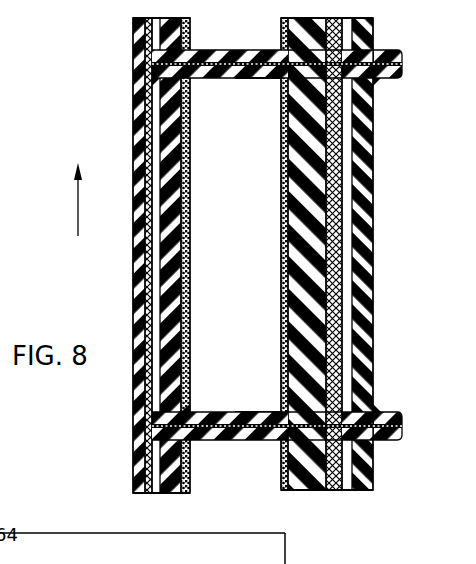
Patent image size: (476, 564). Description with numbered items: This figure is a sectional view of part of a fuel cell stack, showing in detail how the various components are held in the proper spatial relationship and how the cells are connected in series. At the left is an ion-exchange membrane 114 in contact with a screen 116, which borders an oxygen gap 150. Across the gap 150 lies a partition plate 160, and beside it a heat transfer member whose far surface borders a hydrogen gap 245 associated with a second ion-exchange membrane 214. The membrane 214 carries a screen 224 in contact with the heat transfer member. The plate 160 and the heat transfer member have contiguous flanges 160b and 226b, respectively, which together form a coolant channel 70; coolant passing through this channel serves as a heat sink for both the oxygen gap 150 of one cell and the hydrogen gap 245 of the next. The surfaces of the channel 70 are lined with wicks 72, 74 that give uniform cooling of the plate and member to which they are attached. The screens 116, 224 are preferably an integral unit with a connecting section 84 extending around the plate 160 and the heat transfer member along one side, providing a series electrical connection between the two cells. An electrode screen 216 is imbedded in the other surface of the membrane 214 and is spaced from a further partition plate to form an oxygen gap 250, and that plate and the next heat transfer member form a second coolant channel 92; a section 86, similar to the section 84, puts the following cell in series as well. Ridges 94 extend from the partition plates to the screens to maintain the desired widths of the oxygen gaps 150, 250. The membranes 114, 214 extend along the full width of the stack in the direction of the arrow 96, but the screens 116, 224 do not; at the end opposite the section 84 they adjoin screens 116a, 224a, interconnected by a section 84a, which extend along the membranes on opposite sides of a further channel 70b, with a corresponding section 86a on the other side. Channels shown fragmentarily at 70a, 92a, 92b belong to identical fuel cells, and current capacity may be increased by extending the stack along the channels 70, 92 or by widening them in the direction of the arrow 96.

The coolant channel 70 is at (246, 247).
The coolant channel 70a is at (235, 31).
The coolant channel 70b is at (250, 502).
The wick 72 is at (188, 262).
The wick 74 is at (280, 250).
The connecting section 84 is at (225, 55).
The connecting section 84a is at (237, 430).
The connecting section 86 is at (399, 64).
The connecting section 86a is at (398, 438).
The coolant channel 92 is at (420, 247).
The coolant channel 92a is at (432, 37).
The coolant channel 92b is at (423, 494).
The ridges 94 is at (150, 68).
The arrow 96 is at (78, 191).
The ion-exchange membrane 114 is at (138, 378).
The screen 116 is at (138, 297).
The screen 116a is at (145, 458).
The oxygen gap 150 is at (150, 200).
The partition plate 160 is at (170, 178).
The flange 160b is at (218, 79).
The ion-exchange membrane 214 is at (345, 318).
The electrode screen 216 is at (348, 144).
The screen 224 is at (300, 153).
The screen 224a is at (320, 487).
The flange 226b is at (262, 79).
The hydrogen gap 245 is at (300, 293).
The oxygen gap 250 is at (350, 190).